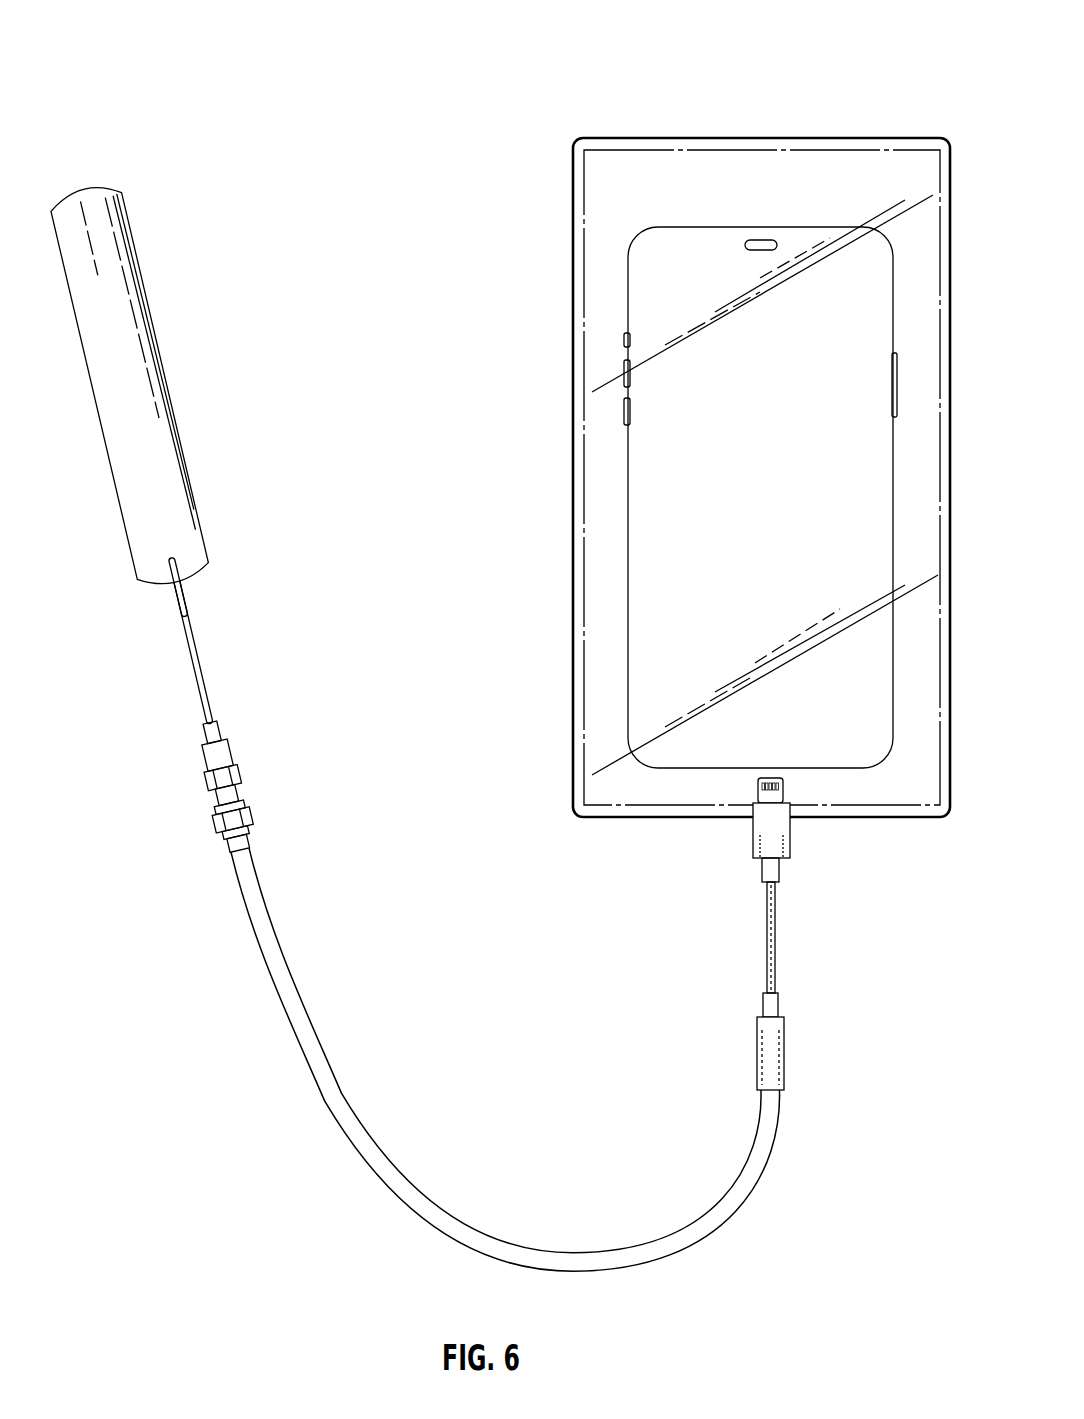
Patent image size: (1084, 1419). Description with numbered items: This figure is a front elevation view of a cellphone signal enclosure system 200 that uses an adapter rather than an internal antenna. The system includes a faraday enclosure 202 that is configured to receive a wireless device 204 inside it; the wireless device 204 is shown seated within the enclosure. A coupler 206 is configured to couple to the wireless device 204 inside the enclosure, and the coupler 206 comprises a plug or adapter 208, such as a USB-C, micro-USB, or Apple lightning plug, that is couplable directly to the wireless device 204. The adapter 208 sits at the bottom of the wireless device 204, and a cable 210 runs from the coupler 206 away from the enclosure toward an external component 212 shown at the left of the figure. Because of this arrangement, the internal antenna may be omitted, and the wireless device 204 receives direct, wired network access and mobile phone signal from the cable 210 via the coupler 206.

The cellphone signal enclosure system 200 is at (386, 40).
The faraday enclosure 202 is at (750, 170).
The wireless device 204 is at (633, 475).
The coupler 206 is at (772, 932).
The plug or adapter 208 is at (783, 823).
The cable 210 is at (275, 965).
The handheld device housing 212 is at (147, 347).